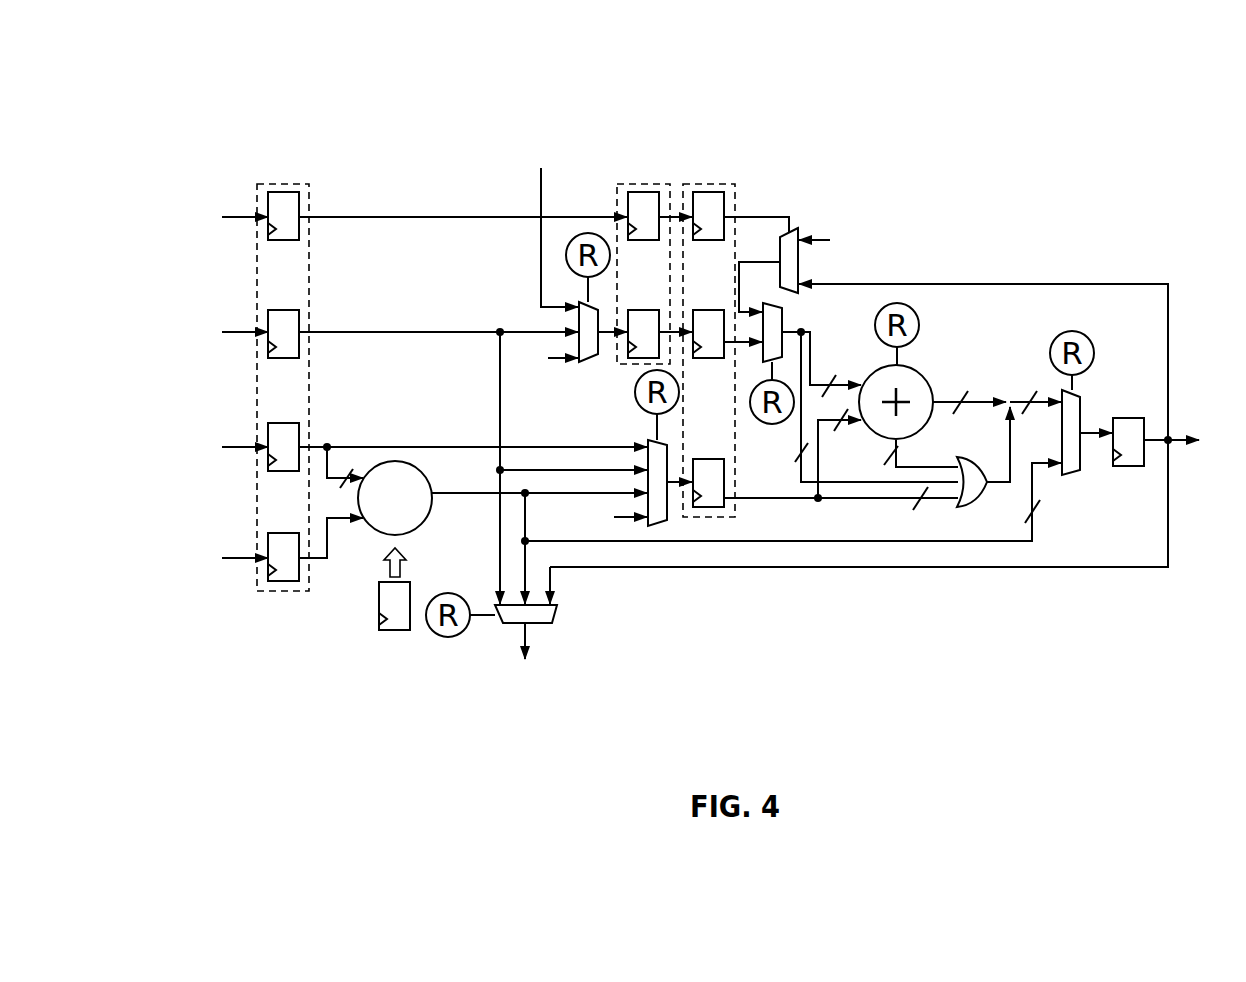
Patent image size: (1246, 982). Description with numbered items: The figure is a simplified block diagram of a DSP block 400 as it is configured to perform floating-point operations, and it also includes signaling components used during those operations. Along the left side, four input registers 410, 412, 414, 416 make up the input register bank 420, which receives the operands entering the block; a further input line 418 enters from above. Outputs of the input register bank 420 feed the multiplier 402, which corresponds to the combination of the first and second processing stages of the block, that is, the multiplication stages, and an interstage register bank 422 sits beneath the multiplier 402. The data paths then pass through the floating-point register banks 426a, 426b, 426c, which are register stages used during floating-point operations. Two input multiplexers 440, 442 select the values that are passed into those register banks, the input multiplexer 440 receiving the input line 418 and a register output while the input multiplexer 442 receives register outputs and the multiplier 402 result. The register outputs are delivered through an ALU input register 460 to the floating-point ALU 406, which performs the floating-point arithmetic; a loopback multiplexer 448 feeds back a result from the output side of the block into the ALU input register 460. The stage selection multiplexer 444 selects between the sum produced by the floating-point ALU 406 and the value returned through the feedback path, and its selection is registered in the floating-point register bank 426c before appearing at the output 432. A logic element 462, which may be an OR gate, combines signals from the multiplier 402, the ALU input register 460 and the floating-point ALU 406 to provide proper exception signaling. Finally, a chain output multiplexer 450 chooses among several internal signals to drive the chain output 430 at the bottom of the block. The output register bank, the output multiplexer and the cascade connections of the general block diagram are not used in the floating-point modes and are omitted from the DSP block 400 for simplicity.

The DSP block 400 is at (296, 66).
The multiplier 402 is at (392, 462).
The floating-point ALU 406 is at (925, 378).
The first input register 410 is at (240, 214).
The second input register 412 is at (240, 329).
The third input register 414 is at (240, 444).
The fourth input register 416 is at (240, 555).
The input signal line 418 is at (538, 194).
The input register bank 420 is at (266, 596).
The interstage register bank 422 is at (378, 597).
The floating-point register bank 426a is at (631, 183).
The floating-point register bank 426b is at (718, 183).
The floating-point register bank 426c is at (1118, 416).
The first output 430 is at (531, 640).
The second output 432 is at (1172, 446).
The input multiplexer 440 is at (588, 364).
The input multiplexer 442 is at (657, 527).
The stage selection multiplexer 444 is at (1076, 476).
The loopback multiplexer 448 is at (793, 226).
The chain output multiplexer 450 is at (556, 621).
The ALU input register 460 is at (792, 322).
The logic element 462 is at (975, 505).